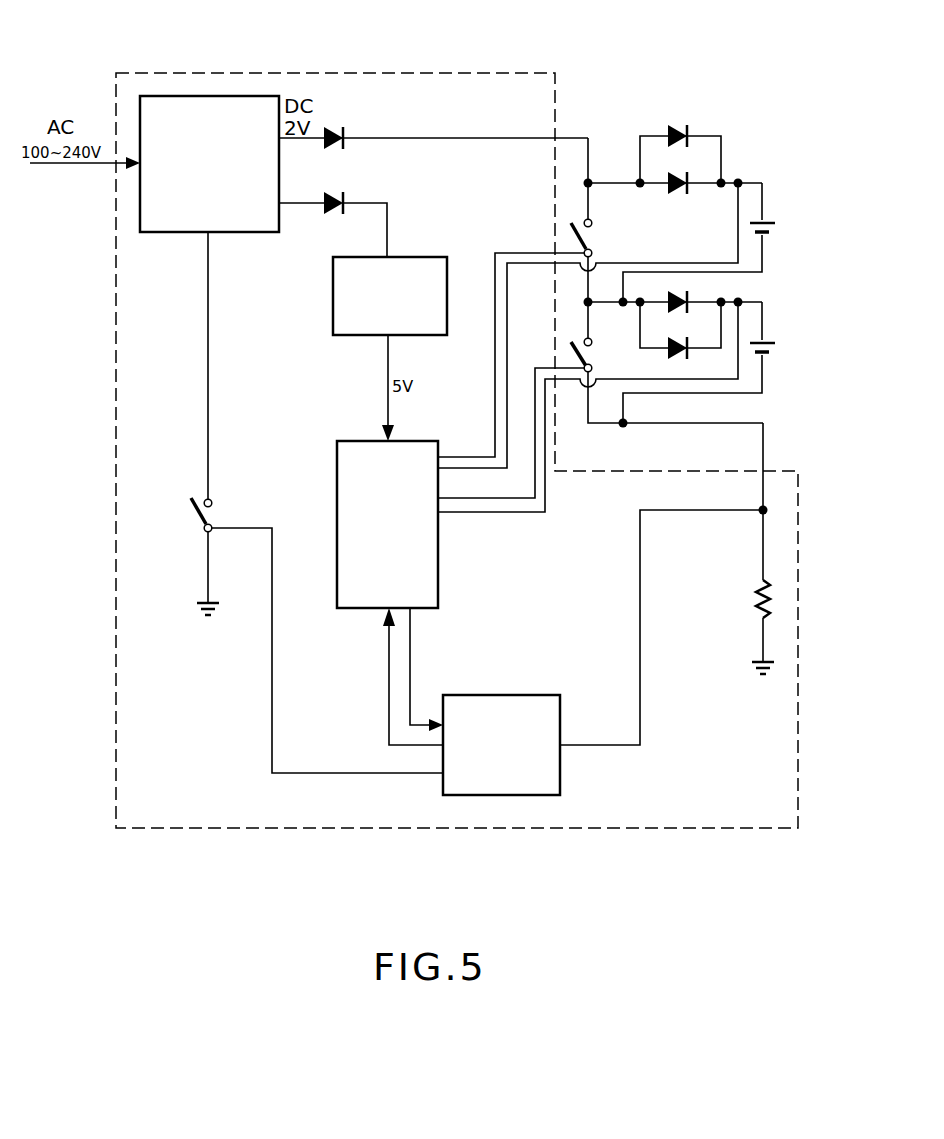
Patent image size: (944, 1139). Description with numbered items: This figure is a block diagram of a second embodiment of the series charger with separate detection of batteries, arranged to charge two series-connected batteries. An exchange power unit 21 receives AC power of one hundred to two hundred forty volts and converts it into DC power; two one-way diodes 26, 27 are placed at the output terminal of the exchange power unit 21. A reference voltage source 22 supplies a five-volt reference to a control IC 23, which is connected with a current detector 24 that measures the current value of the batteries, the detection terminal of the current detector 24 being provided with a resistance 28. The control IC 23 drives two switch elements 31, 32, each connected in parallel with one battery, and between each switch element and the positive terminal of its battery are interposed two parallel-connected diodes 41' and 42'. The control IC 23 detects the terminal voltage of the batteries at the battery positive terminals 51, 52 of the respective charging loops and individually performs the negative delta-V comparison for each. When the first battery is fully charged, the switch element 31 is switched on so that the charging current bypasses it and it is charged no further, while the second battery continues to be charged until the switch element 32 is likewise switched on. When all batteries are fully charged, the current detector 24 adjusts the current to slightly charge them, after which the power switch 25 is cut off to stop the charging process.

The exchange power unit 21 is at (217, 107).
The reference voltage source 22 is at (432, 263).
The control IC 23 is at (430, 442).
The current detector 24 is at (543, 702).
The power switch 25 is at (213, 513).
The one-way diode 26 is at (352, 132).
The one-way diode 27 is at (348, 197).
The resistance 28 is at (757, 605).
The switch element 31 is at (589, 242).
The switch element 32 is at (588, 360).
The parallel-connected diodes 41' is at (675, 128).
The parallel-connected diodes 42' is at (675, 325).
The battery positive terminal 51 is at (740, 177).
The battery positive terminal 52 is at (748, 295).